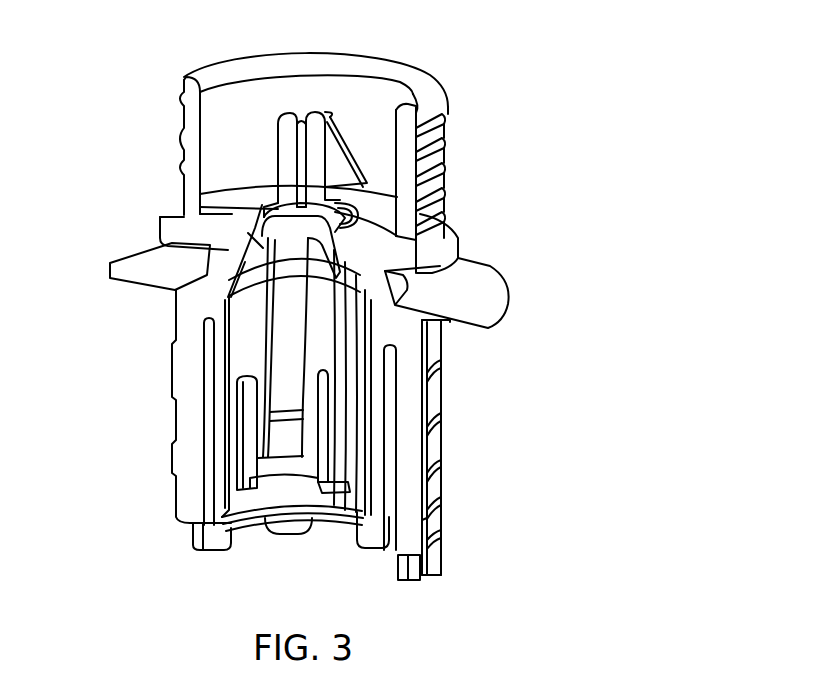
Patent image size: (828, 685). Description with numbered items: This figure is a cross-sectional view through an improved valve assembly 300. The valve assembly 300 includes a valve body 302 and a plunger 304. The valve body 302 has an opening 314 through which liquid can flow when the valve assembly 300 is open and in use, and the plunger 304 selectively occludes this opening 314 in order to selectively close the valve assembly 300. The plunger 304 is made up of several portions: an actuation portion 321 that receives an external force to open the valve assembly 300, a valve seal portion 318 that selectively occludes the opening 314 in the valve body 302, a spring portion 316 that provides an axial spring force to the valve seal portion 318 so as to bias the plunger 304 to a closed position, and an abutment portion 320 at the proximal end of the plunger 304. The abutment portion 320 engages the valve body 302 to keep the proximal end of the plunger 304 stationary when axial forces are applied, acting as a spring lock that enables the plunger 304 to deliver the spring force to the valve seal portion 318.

The valve assembly 300 is at (513, 112).
The valve body 302 is at (443, 437).
The plunger 304 is at (247, 165).
The opening 314 is at (240, 230).
The spring portion 316 is at (287, 355).
The valve seal portion 318 is at (342, 210).
The abutment portion 320 is at (277, 490).
The actuation portion 321 is at (340, 126).